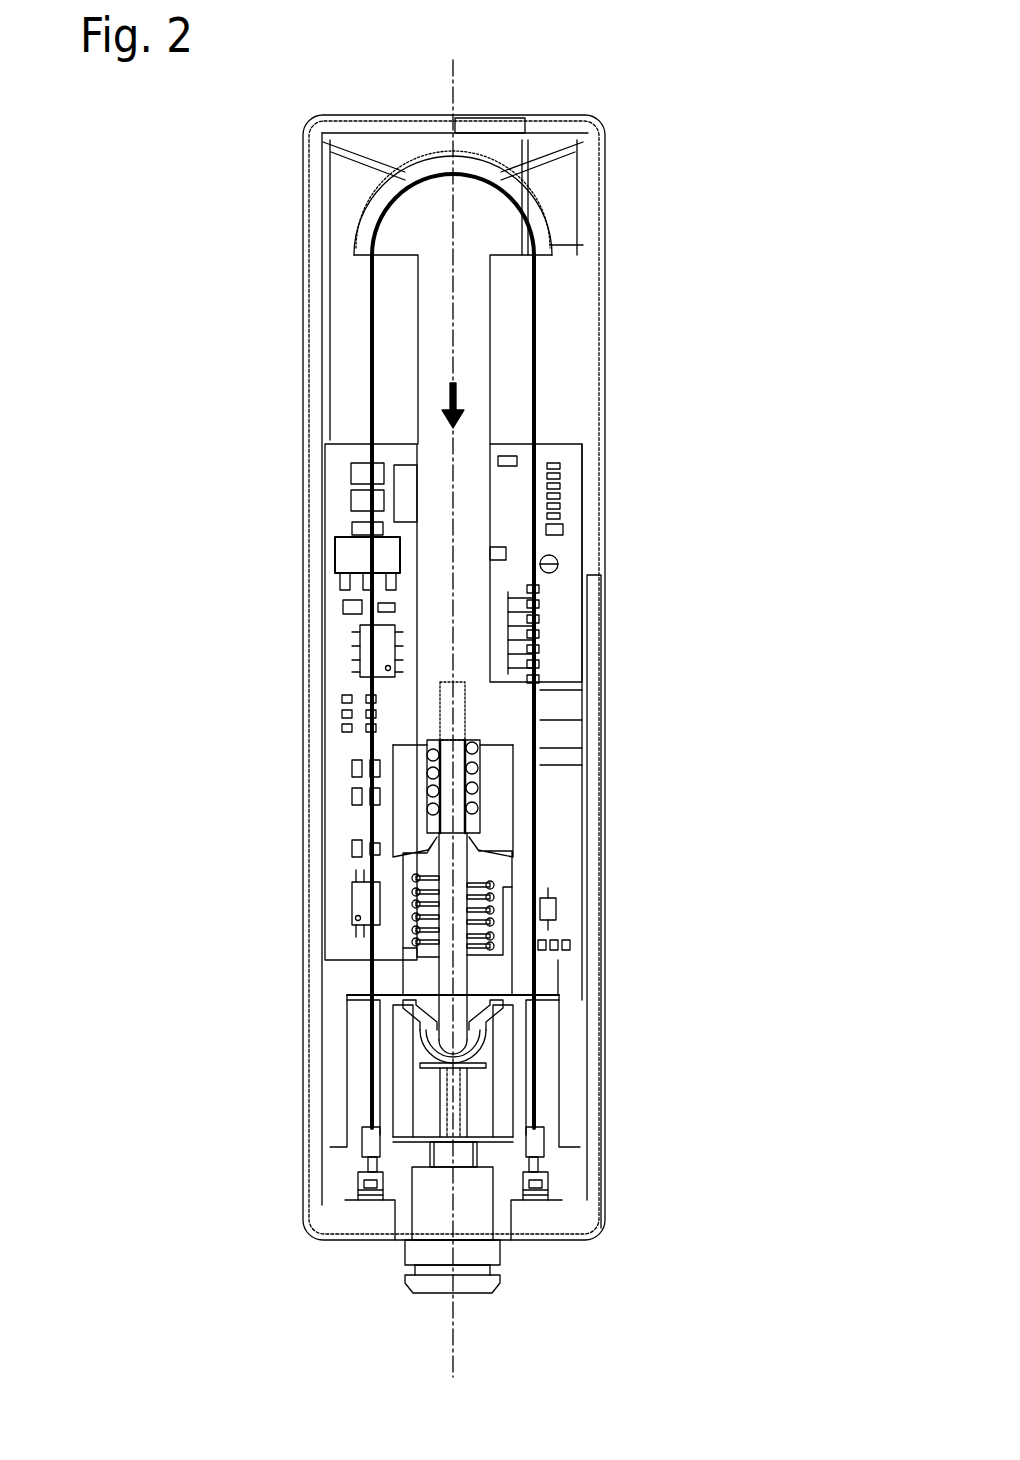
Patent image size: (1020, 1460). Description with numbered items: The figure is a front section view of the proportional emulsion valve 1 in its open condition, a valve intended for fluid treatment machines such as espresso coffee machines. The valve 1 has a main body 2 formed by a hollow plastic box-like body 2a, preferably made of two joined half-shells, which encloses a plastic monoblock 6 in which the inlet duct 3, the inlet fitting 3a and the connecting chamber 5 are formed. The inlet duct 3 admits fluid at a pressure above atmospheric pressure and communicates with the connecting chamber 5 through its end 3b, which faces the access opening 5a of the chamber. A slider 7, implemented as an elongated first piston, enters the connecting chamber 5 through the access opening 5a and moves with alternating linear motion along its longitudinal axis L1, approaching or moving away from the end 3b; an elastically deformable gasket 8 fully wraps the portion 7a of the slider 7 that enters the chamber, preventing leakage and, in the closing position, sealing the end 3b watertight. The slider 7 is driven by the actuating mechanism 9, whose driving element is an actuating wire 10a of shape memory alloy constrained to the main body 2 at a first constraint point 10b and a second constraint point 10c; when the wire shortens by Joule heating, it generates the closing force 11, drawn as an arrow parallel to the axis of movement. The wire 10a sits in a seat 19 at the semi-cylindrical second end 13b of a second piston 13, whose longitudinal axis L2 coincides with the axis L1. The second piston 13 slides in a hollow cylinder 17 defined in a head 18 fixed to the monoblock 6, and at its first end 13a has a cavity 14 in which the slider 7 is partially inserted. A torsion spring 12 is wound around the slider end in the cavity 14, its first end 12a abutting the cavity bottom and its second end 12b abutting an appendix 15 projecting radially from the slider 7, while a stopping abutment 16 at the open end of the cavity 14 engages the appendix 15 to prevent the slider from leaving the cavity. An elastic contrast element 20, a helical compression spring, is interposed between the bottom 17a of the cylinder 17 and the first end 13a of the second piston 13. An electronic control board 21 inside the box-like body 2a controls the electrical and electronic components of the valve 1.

The proportional emulsion valve 1 is at (717, 84).
The main body 2 is at (612, 165).
The box-like body 2a is at (301, 140).
The inlet duct 3 is at (447, 1107).
The inlet fitting 3a is at (484, 1288).
The end of the inlet duct 3b is at (447, 1073).
The connecting chamber 5 is at (427, 1060).
The access opening 5a is at (407, 993).
The monoblock 6 is at (548, 1110).
The slider 7 is at (476, 985).
The portion of the slider 7a is at (465, 1045).
The gasket 8 is at (430, 1040).
The actuating mechanism 9 is at (358, 172).
The actuating wire 10a is at (367, 285).
The first constraint point 10b is at (377, 1198).
The second constraint point 10c is at (541, 1198).
The closing force 11 is at (440, 392).
The torsion spring 12 is at (485, 762).
The first end of the torsion spring 12a is at (485, 740).
The second end of the torsion spring 12b is at (488, 800).
The second piston 13 is at (464, 340).
The first end of the second piston 13a is at (403, 858).
The second end of the second piston 13b is at (488, 160).
The cavity 14 is at (427, 783).
The appendix 15 is at (488, 820).
The stopping abutment 16 is at (495, 848).
The hollow cylinder 17 is at (388, 912).
The bottom of the cylinder cavity 17a is at (500, 950).
The head 18 is at (388, 845).
The seat 19 is at (413, 178).
The elastic contrast element 20 is at (498, 920).
The electronic control board 21 is at (546, 462).
The longitudinal axis of the slider L1 is at (447, 828).
The longitudinal axis of the second piston L2 is at (458, 80).